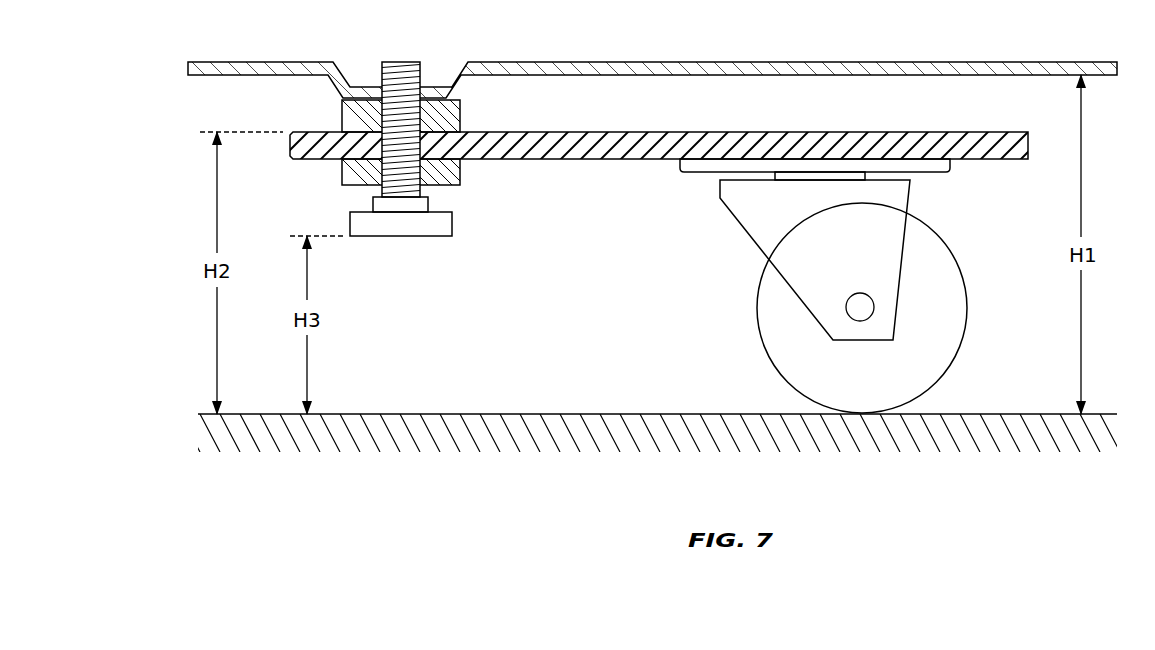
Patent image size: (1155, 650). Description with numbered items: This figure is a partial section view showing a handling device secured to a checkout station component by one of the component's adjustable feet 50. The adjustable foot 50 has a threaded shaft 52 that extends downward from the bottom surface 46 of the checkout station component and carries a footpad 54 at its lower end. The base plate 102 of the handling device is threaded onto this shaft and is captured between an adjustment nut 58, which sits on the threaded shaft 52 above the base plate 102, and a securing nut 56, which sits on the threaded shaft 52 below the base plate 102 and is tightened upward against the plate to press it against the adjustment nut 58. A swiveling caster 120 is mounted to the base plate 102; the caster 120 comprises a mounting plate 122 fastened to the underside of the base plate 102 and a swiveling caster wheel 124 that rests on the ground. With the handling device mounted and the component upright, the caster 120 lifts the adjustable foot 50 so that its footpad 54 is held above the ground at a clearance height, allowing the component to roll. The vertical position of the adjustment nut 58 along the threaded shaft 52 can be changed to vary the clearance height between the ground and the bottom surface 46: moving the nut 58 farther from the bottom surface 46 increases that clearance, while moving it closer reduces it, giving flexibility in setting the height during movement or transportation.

The bottom surface 46 is at (722, 62).
The adjustable foot 50 is at (467, 149).
The threaded shaft 52 is at (385, 118).
The footpad 54 is at (425, 228).
The securing nut 56 is at (448, 176).
The adjustment nut 58 is at (447, 120).
The base plate 102 is at (517, 160).
The caster 120 is at (851, 286).
The mounting plate 122 is at (935, 173).
The swiveling caster wheel 124 is at (960, 347).